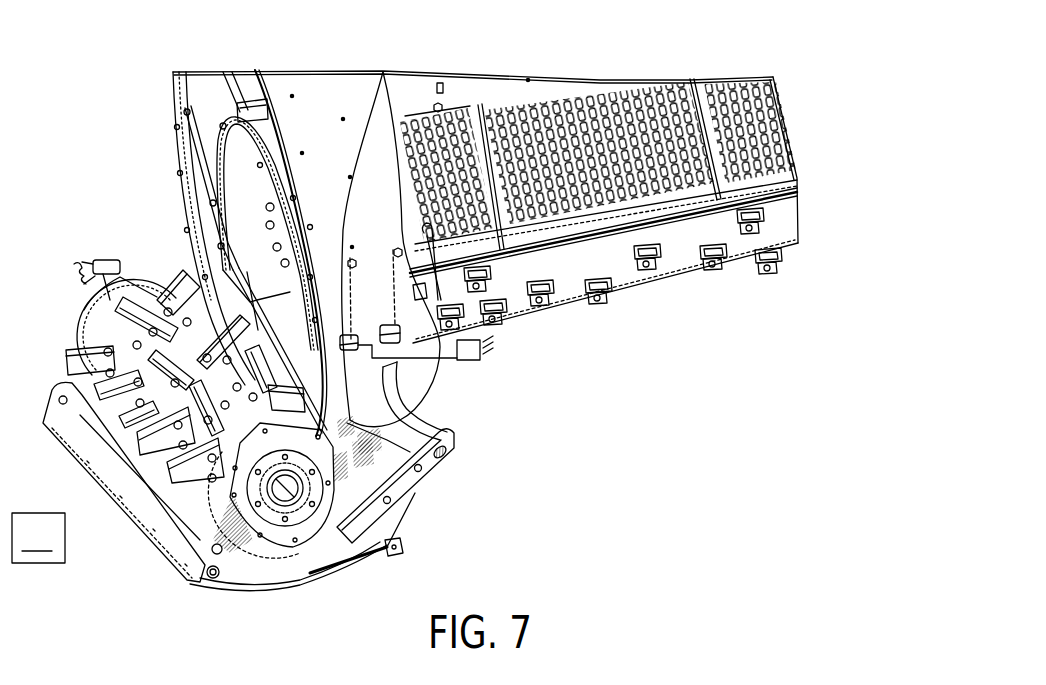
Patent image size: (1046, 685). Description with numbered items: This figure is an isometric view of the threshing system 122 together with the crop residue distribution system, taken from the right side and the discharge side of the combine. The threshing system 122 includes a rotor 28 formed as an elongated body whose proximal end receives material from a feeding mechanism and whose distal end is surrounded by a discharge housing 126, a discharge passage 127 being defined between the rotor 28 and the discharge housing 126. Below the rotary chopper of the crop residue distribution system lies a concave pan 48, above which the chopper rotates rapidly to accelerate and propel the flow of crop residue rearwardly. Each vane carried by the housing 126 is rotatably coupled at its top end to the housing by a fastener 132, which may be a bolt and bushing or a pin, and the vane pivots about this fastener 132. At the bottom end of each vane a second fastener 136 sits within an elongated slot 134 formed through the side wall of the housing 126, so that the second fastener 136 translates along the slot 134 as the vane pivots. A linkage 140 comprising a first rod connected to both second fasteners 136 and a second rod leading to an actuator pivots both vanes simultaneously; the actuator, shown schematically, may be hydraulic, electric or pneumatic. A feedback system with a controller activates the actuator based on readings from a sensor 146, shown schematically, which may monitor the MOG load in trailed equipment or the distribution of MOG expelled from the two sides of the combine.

The rotor 28 is at (247, 188).
The concave pan 48 is at (415, 493).
The threshing system 122 is at (458, 379).
The discharge housing 126 is at (315, 88).
The discharge passage 127 is at (207, 86).
The fastener 132 is at (384, 72).
The elongated slot 134 is at (348, 440).
The second fastener 136 is at (440, 462).
The linkage 140 is at (425, 380).
The sensor 146 is at (199, 486).